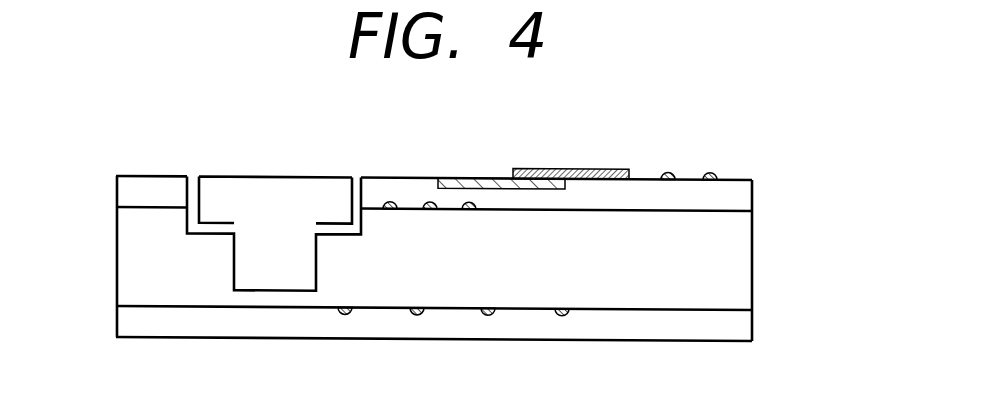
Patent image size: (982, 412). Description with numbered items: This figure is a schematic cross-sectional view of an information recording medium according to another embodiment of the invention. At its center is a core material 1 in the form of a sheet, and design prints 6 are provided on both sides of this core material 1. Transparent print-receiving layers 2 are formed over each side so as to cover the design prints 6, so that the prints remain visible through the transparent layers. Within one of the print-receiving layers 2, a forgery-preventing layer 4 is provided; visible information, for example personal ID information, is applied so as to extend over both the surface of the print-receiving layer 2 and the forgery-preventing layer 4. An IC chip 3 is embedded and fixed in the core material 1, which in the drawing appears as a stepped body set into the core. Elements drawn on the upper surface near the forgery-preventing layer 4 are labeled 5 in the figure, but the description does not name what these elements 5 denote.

The core material 1 is at (736, 258).
The print-receiving layer 2 is at (121, 186).
The IC chip 3 is at (318, 186).
The forgery-preventing layer 4 is at (448, 180).
The electrode pad / bumps 5 is at (605, 170).
The design print 6 is at (412, 315).